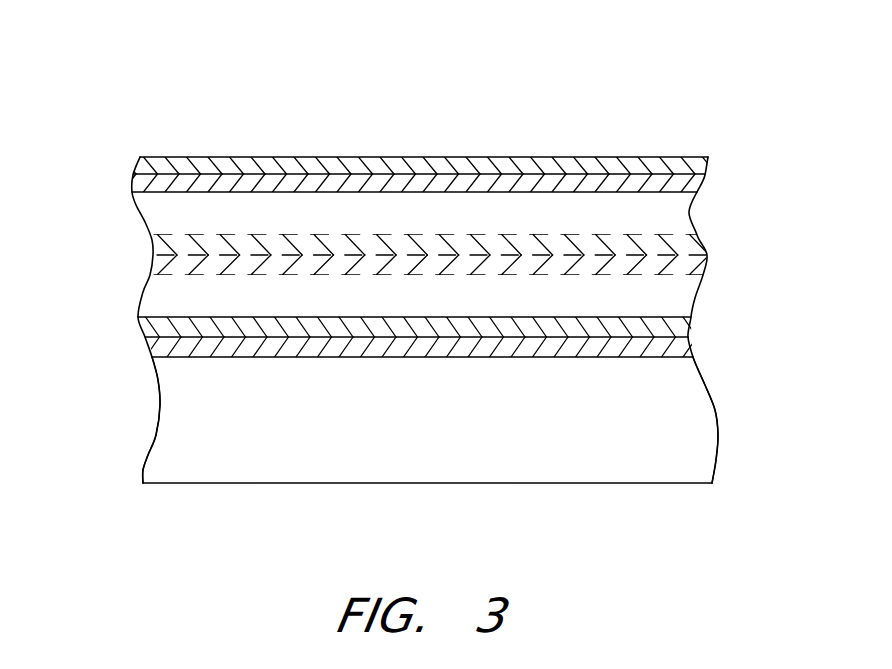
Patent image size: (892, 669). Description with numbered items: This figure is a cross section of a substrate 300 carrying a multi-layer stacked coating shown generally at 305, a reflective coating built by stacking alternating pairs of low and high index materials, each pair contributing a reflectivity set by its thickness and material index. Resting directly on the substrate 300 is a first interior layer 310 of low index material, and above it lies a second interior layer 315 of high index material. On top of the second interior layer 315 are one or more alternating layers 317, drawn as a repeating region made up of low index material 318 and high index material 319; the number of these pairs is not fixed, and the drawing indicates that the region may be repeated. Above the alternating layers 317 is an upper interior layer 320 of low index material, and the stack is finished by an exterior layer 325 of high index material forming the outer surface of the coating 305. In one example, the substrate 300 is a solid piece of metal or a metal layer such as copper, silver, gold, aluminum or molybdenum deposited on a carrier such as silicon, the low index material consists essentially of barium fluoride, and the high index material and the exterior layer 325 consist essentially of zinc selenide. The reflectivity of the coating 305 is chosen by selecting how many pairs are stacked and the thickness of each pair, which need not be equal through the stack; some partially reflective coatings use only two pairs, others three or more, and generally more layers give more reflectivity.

The substrate 300 is at (238, 463).
The multi-layer stacked coating 305 is at (218, 95).
The first interior layer 310 is at (153, 347).
The second interior layer 315 is at (138, 323).
The alternating layers 317 is at (124, 190).
The low index material 318 is at (706, 263).
The high index material 319 is at (689, 236).
The upper interior layer 320 is at (138, 183).
The exterior layer 325 is at (140, 165).